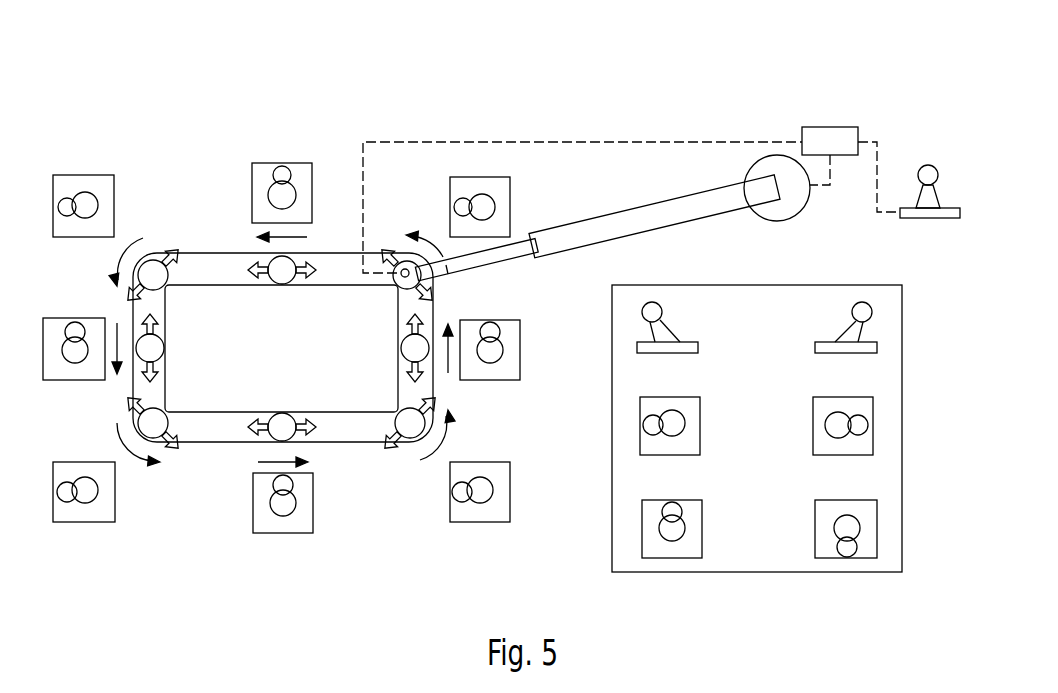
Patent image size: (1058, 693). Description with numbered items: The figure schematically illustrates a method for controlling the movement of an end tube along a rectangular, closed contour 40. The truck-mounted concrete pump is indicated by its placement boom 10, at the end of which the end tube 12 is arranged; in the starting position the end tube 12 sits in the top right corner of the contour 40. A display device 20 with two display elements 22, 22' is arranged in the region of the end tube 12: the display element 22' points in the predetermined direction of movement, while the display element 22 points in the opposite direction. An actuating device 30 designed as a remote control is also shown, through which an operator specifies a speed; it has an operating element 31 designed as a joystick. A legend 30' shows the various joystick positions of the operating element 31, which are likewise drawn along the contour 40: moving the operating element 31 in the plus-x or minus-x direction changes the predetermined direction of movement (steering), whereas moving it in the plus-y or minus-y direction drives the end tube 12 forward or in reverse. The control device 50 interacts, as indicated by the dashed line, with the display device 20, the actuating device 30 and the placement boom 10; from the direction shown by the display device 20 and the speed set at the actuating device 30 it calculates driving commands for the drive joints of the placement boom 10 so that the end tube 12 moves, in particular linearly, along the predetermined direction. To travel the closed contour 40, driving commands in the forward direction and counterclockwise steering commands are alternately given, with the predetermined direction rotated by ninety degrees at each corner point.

The placement boom 10 is at (557, 244).
The end tube 12 is at (390, 281).
The display device 20 is at (601, 196).
The display element 22 is at (466, 289).
The display element 22' is at (394, 218).
The actuating device 30 is at (903, 117).
The joystick command legend 30' is at (757, 475).
The operating element 31 is at (928, 220).
The contour 40 is at (215, 268).
The control device 50 is at (830, 138).